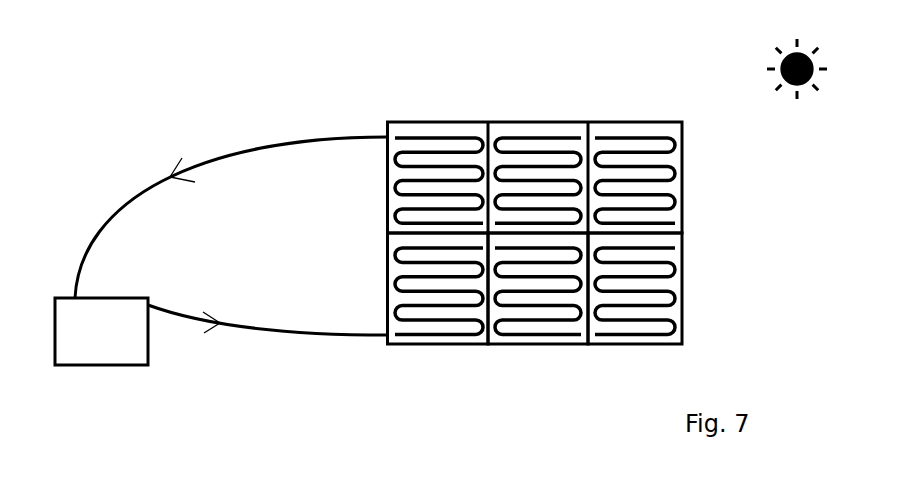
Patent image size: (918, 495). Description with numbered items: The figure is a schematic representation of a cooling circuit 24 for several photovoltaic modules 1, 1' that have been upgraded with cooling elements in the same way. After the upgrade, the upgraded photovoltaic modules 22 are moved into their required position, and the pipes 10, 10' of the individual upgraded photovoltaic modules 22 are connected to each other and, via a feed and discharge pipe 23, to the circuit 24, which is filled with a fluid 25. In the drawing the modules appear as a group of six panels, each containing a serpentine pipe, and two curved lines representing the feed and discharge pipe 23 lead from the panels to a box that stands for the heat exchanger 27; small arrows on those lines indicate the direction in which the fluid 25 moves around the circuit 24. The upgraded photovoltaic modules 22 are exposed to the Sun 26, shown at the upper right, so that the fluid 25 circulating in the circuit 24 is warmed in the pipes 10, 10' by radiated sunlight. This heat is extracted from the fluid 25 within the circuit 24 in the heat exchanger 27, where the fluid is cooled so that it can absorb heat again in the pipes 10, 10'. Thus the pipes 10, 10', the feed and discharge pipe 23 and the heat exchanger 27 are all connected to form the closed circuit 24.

The photovoltaic module 1 is at (438, 320).
The photovoltaic module 1' is at (538, 321).
The pipe 10 is at (438, 329).
The pipe 10' is at (560, 329).
The upgraded photovoltaic module 22 is at (518, 133).
The feed and discharge pipe 23 is at (262, 147).
The circuit 24 is at (140, 180).
The fluid 25 is at (275, 333).
The Sun 26 is at (805, 95).
The heat exchanger 27 is at (88, 346).